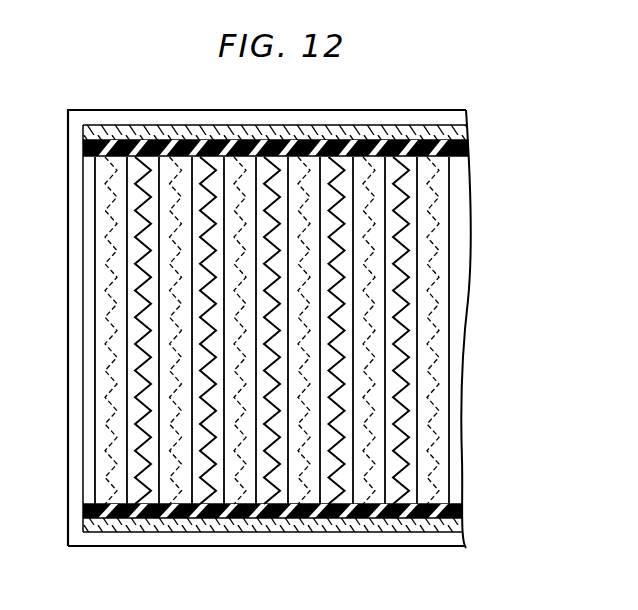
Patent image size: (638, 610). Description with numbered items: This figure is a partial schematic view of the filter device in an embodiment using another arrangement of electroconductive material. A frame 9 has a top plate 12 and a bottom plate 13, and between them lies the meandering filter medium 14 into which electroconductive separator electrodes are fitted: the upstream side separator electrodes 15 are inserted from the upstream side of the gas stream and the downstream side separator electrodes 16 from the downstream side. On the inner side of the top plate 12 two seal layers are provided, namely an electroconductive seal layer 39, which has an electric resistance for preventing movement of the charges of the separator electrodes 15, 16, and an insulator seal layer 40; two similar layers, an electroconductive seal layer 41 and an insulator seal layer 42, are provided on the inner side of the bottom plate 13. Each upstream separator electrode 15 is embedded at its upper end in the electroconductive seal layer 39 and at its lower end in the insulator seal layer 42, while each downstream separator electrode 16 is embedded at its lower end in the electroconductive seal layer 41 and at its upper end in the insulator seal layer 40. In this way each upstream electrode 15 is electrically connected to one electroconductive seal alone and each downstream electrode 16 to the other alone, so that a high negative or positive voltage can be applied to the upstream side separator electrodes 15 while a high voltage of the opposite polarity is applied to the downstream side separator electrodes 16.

The frame 9 is at (67, 266).
The top plate 12 is at (296, 122).
The bottom plate 13 is at (457, 542).
The meandering filter medium 14 is at (160, 330).
The upstream side separator electrodes 15 is at (106, 440).
The downstream side separator electrodes 16 is at (146, 448).
The electroconductive seal layer 39 is at (457, 133).
The insulator seal layer 40 is at (465, 147).
The electroconductive seal layer 41 is at (455, 522).
The insulator seal layer 42 is at (452, 511).